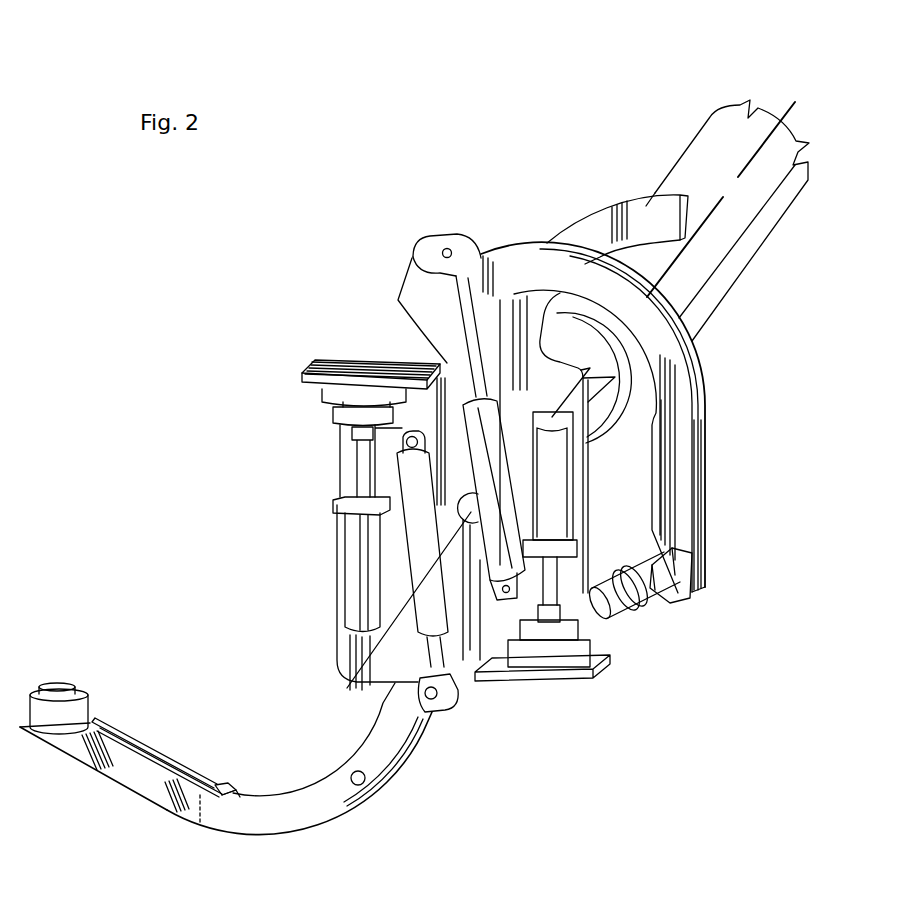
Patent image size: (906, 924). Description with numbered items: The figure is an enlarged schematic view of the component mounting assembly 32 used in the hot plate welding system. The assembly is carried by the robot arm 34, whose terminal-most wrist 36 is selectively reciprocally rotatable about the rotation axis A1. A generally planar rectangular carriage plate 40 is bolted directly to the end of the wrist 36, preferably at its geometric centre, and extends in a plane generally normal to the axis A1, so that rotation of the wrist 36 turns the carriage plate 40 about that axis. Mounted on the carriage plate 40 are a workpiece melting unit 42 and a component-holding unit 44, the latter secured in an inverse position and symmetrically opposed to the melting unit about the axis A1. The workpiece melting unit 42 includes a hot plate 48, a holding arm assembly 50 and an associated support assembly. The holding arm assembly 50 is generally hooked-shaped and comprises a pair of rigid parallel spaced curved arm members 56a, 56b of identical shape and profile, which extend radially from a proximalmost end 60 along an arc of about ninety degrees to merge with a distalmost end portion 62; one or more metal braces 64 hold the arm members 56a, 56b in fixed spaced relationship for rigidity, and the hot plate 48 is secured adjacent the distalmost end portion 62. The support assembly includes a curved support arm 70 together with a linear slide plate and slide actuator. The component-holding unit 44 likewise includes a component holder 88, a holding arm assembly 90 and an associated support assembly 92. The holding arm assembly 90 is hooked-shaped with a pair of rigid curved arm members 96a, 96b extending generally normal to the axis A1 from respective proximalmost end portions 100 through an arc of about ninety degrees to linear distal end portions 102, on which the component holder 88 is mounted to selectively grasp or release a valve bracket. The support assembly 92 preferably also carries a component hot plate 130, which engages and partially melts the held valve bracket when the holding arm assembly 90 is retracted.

The component mounting assembly 32 is at (337, 450).
The robot arm 34 is at (731, 289).
The wrist 36 is at (603, 440).
The carriage plate 40 is at (450, 388).
The workpiece melting unit 42 is at (153, 812).
The component-holding unit 44 is at (708, 437).
The hot plate 48 is at (63, 690).
The holding arm assembly 50 is at (300, 807).
The curved arm member 56a is at (107, 727).
The curved arm member 56b is at (143, 740).
The proximalmost end 60 is at (403, 698).
The distalmost end portion 62 is at (20, 727).
The metal brace 64 is at (223, 787).
The curved support arm 70 is at (233, 793).
The component holder 88 is at (660, 600).
The holding arm assembly 90 is at (673, 500).
The support assembly 92 is at (578, 227).
The curved arm member 96a is at (703, 527).
The curved arm member 96b is at (692, 550).
The proximalmost end portion 100 is at (443, 270).
The linear distal end portion 102 is at (683, 607).
The component hot plate 130 is at (640, 620).
The rotation axis A1 is at (577, 394).